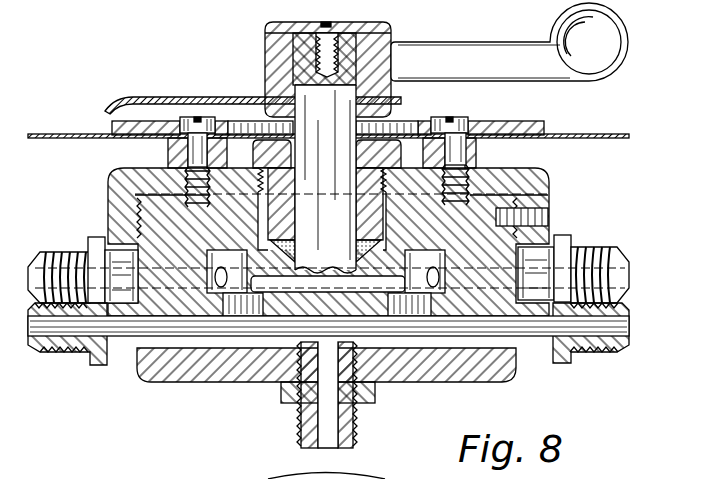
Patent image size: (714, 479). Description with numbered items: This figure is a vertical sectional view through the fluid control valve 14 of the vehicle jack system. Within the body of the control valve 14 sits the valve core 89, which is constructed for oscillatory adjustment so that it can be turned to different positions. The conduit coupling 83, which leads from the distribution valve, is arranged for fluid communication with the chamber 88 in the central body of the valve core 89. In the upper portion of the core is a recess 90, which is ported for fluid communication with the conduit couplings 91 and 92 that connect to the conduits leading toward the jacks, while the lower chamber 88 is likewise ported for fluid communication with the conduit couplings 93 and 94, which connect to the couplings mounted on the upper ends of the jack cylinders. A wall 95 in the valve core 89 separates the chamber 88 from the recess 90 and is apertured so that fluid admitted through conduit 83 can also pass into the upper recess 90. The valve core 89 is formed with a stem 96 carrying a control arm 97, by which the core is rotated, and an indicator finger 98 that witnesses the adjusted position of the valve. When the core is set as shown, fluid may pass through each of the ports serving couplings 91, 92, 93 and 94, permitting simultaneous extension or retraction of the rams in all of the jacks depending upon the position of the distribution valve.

The control valve 14 is at (502, 362).
The conduit coupling 83 is at (345, 425).
The chamber 88 is at (275, 340).
The valve core 89 is at (222, 280).
The recess 90 is at (207, 300).
The conduit coupling 91 is at (616, 257).
The conduit coupling 92 is at (42, 260).
The conduit coupling 93 is at (629, 335).
The conduit coupling 94 is at (50, 350).
The wall 95 is at (378, 318).
The stem 96 is at (365, 80).
The control arm 97 is at (468, 62).
The indicator finger 98 is at (205, 97).